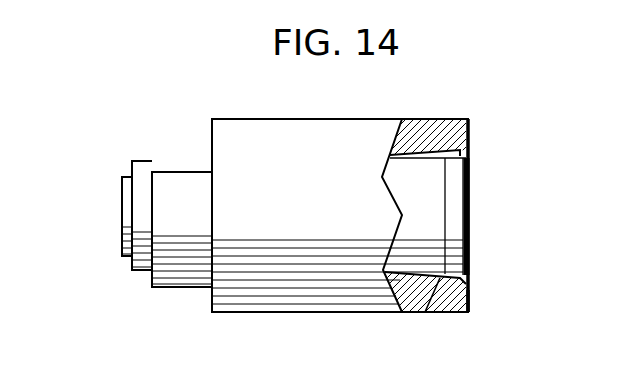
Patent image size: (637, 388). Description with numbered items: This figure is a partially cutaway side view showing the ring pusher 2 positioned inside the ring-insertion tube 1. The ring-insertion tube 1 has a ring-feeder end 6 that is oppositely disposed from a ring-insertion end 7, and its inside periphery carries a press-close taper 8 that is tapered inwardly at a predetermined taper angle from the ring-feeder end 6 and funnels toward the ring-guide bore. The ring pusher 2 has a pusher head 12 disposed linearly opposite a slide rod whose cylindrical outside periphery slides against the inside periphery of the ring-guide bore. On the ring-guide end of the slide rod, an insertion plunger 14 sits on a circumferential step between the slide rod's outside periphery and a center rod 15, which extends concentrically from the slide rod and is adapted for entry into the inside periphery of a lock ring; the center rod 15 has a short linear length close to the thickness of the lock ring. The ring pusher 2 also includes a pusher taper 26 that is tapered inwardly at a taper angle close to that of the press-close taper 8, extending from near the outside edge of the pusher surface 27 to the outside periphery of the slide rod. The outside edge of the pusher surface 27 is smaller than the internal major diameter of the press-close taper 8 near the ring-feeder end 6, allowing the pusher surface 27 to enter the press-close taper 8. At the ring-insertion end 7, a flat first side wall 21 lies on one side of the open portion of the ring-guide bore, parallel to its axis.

The ring-insertion tube 1 is at (293, 224).
The ring pusher 2 is at (80, 219).
The ring-feeder end 6 is at (467, 312).
The ring-insertion end 7 is at (213, 313).
The press-close taper 8 is at (425, 312).
The pusher head 12 is at (453, 175).
The insertion plunger 14 is at (132, 268).
The center rod 15 is at (128, 205).
The first side wall 21 is at (182, 172).
The pusher taper 26 is at (435, 221).
The pusher surface 27 is at (470, 214).